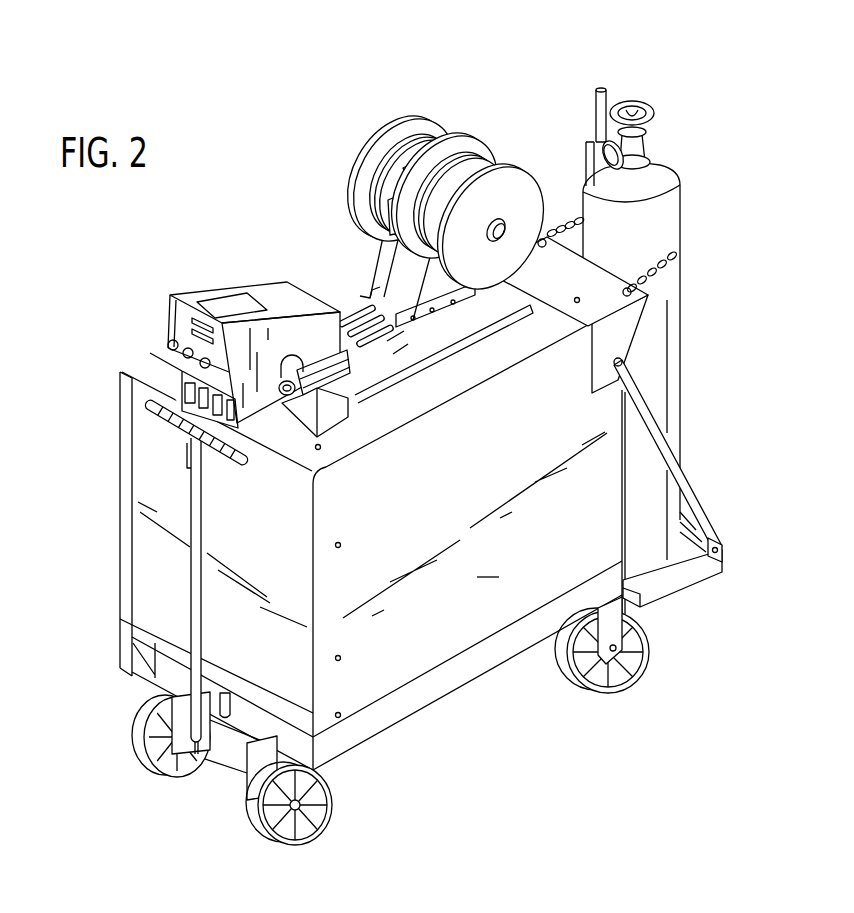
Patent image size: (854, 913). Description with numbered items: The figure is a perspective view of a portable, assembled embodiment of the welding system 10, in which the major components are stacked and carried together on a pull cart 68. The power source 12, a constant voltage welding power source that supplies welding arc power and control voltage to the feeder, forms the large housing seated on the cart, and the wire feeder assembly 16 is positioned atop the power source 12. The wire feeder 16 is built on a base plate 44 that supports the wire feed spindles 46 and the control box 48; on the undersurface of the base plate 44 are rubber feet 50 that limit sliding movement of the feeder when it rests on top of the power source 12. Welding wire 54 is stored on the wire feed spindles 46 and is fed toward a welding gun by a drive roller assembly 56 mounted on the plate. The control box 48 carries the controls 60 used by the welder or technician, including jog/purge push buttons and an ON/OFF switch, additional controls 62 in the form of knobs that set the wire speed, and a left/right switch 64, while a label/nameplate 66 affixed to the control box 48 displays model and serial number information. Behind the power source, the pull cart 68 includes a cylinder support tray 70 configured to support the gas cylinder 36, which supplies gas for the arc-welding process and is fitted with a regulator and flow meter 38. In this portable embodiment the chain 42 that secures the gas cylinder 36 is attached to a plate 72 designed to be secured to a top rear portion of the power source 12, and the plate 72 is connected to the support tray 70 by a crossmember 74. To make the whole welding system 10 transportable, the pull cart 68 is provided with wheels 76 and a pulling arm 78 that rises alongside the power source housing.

The welding system 10 is at (195, 88).
The power source 12 is at (371, 497).
The wire feeder assembly 16 is at (380, 372).
The gas cylinder 36 is at (645, 225).
The regulator and flow meter 38 is at (623, 82).
The chain 42 is at (680, 252).
The base plate 44 is at (451, 336).
The wire feed spindles 46 is at (445, 180).
The control box 48 is at (207, 323).
The rubber feet 50 is at (533, 318).
The welding wire 54 is at (385, 170).
The drive roller assembly 56 is at (290, 427).
The controls 60 is at (180, 419).
The additional controls 62 is at (168, 345).
The left/right switch 64 is at (156, 336).
The label/nameplate 66 is at (218, 303).
The pull cart 68 is at (116, 670).
The cylinder support tray 70 is at (683, 580).
The plate 72 is at (632, 322).
The crossmember 74 is at (674, 463).
The wheels 76 is at (257, 822).
The pulling arm 78 is at (197, 612).